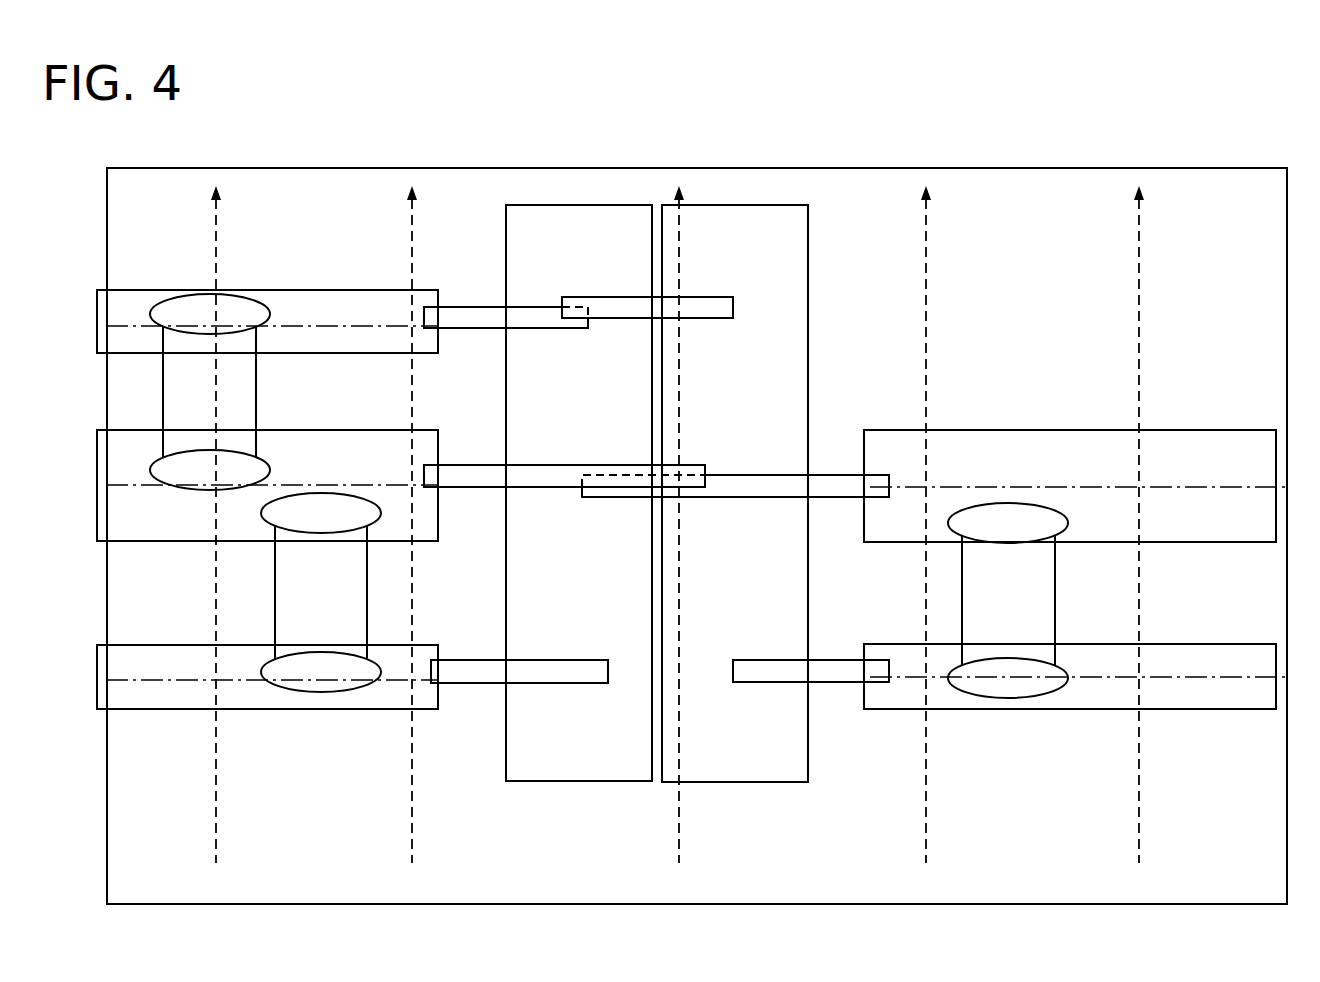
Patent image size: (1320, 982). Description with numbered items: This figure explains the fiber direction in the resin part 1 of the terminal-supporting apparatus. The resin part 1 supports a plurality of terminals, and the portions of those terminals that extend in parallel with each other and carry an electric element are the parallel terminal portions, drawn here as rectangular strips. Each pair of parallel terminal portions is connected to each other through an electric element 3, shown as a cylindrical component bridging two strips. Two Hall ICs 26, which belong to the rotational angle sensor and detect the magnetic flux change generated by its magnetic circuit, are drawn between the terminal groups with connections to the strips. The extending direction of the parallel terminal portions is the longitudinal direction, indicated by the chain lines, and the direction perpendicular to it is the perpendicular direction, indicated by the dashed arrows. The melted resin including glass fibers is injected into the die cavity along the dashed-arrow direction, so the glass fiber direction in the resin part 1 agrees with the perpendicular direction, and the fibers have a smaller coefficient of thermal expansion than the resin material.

The resin part 1 is at (1031, 195).
The electric element 3 is at (176, 397).
The Hall IC 26 is at (506, 262).